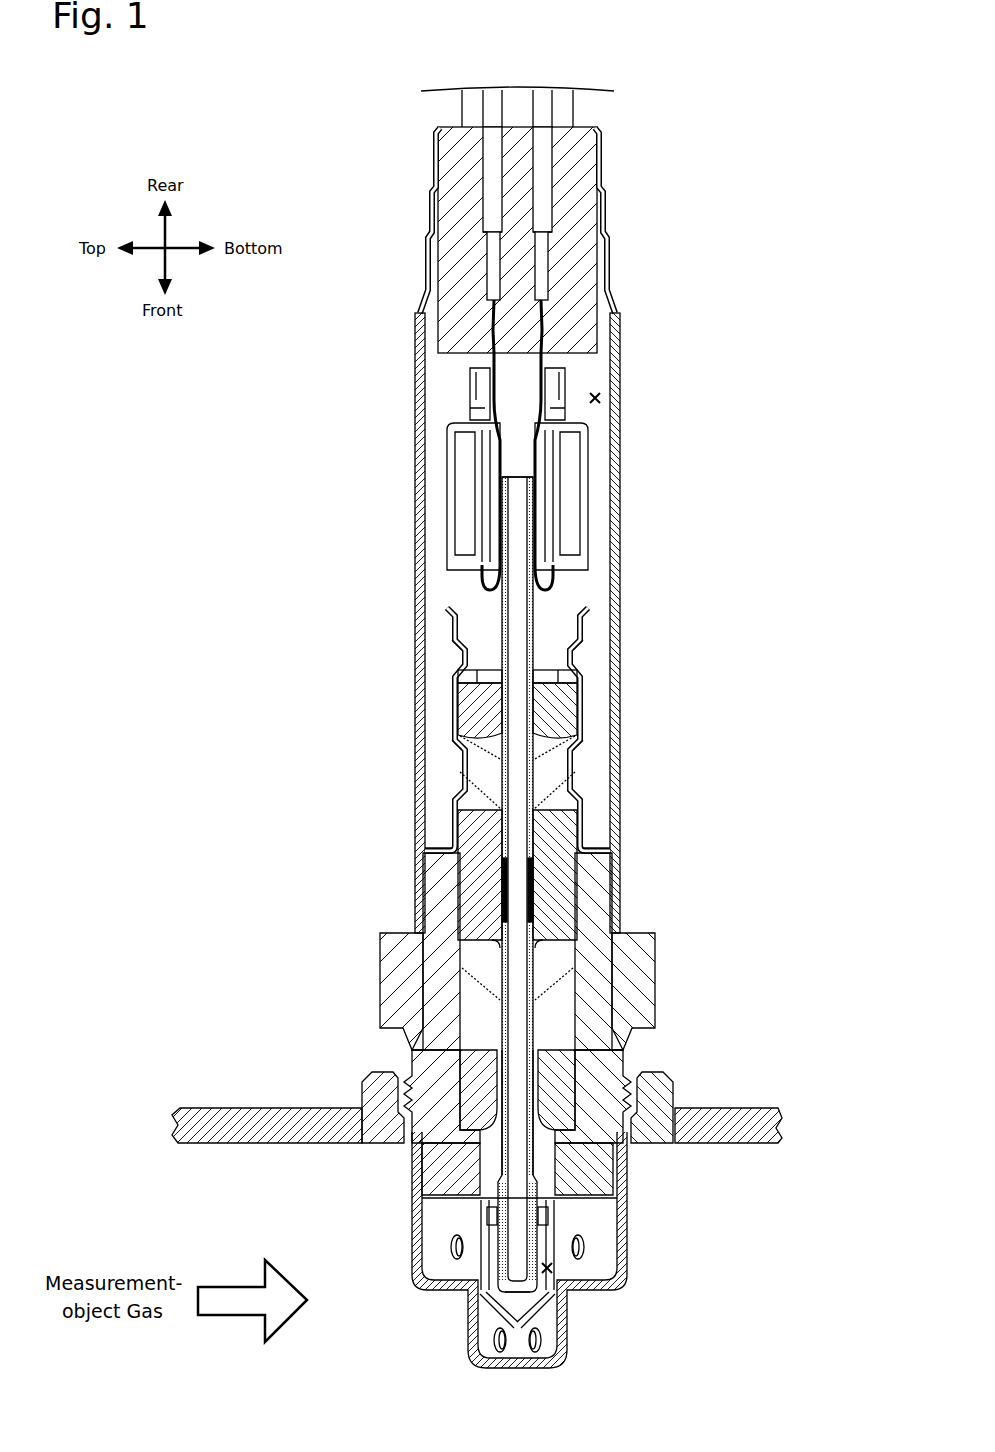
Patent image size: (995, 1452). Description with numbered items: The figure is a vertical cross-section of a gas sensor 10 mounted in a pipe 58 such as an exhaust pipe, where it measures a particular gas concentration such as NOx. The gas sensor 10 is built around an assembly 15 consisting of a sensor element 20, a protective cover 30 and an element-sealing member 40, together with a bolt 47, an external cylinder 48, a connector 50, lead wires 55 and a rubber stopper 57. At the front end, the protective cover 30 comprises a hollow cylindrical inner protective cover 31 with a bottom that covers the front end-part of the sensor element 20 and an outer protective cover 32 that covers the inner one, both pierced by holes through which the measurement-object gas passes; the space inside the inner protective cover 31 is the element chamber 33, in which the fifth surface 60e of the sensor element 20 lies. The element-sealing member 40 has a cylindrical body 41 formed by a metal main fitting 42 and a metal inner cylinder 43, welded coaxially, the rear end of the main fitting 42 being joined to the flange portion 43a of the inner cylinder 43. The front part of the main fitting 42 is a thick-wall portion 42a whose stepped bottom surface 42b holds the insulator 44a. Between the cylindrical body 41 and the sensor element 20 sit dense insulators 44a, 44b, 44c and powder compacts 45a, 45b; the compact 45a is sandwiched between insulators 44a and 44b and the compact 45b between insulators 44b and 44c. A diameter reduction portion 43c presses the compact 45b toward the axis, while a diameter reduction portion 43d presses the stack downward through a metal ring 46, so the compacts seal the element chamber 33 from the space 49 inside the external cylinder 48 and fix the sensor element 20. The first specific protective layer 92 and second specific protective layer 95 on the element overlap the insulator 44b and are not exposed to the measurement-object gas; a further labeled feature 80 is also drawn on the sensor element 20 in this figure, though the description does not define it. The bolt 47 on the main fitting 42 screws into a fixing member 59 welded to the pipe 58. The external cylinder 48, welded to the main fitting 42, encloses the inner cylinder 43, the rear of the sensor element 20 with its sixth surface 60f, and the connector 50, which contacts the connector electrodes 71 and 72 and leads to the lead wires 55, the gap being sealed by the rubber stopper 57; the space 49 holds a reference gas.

The gas sensor 10 is at (515, 727).
The assembly 15 is at (575, 988).
The sensor element 20 is at (520, 1092).
The protective cover 30 is at (604, 1250).
The inner protective cover 31 is at (610, 1228).
The outer protective cover 32 is at (617, 1245).
The element chamber 33 is at (549, 1268).
The element-sealing member 40 is at (550, 903).
The cylindrical body 41 is at (517, 903).
The main fitting 42 is at (493, 1026).
The thick-wall portion 42a is at (447, 1170).
The bottom surface 42b is at (468, 1110).
The inner cylinder 43 is at (514, 729).
The flange portion 43a is at (432, 848).
The diameter reduction portion 43c is at (462, 760).
The diameter reduction portion 43d is at (463, 653).
The insulator 44a is at (605, 1045).
The insulator 44b is at (560, 920).
The insulator 44c is at (568, 715).
The compact 45a is at (567, 993).
The compact 45b is at (560, 785).
The metal ring 46 is at (572, 677).
The bolt 47 is at (393, 960).
The external cylinder 48 is at (620, 598).
The space 49 is at (602, 398).
The connector 50 is at (566, 496).
The lead wires 55 is at (495, 177).
The rubber stopper 57 is at (573, 322).
The pipe 58 is at (260, 1125).
The fixing member 59 is at (375, 1085).
The fifth surface 60e is at (517, 1292).
The sixth surface 60f is at (517, 478).
The connector electrode 71 is at (498, 497).
The connector electrode 72 is at (535, 502).
The porous protective layer 80 is at (533, 884).
The first specific protective layer 92 is at (507, 868).
The second specific protective layer 95 is at (527, 890).